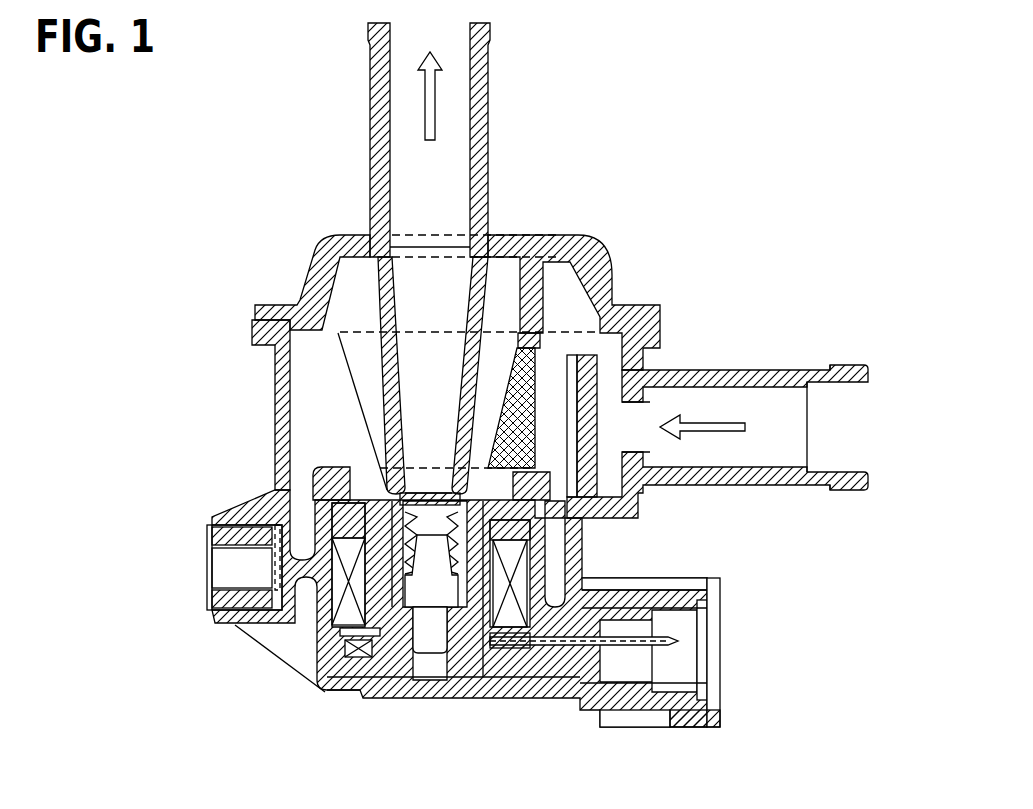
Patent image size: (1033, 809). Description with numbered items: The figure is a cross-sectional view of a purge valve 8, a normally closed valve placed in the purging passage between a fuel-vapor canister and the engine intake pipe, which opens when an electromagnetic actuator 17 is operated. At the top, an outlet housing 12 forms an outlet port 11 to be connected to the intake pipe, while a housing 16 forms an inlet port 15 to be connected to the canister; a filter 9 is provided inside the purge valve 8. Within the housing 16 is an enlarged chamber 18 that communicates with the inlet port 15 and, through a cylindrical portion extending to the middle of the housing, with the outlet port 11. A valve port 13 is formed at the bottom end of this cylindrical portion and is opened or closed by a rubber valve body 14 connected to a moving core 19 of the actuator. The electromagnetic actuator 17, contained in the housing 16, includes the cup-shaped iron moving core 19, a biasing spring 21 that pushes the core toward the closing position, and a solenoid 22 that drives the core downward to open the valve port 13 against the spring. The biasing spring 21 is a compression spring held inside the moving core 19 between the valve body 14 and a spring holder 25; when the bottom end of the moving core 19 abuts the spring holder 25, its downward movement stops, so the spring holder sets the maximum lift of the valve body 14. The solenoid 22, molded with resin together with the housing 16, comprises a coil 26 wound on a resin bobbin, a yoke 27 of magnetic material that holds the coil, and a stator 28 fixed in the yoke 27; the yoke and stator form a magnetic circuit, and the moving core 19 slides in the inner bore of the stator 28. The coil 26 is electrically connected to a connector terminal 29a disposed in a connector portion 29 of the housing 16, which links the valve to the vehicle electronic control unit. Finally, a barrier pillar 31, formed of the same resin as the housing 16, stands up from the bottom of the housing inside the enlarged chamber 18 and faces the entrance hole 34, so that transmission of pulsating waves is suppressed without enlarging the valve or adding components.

The purge valve 8 is at (272, 137).
The filter 9 is at (548, 345).
The outlet port 11 is at (376, 96).
The outlet housing 12 is at (320, 237).
The valve port 13 is at (457, 483).
The valve body 14 is at (463, 502).
The inlet port 15 is at (748, 373).
The housing 16 is at (282, 367).
The electromagnetic actuator 17 is at (357, 705).
The enlarged chamber 18 is at (313, 388).
The moving core 19 is at (355, 492).
The biasing spring 21 is at (465, 577).
The solenoid 22 is at (182, 654).
The spring holder 25 is at (427, 600).
The coil 26 is at (335, 592).
The yoke 27 is at (322, 688).
The stator 28 is at (352, 650).
The connector portion 29 is at (690, 740).
The connector terminal 29a is at (668, 642).
The barrier pillar 31 is at (597, 390).
The entrance hole 34 is at (643, 415).